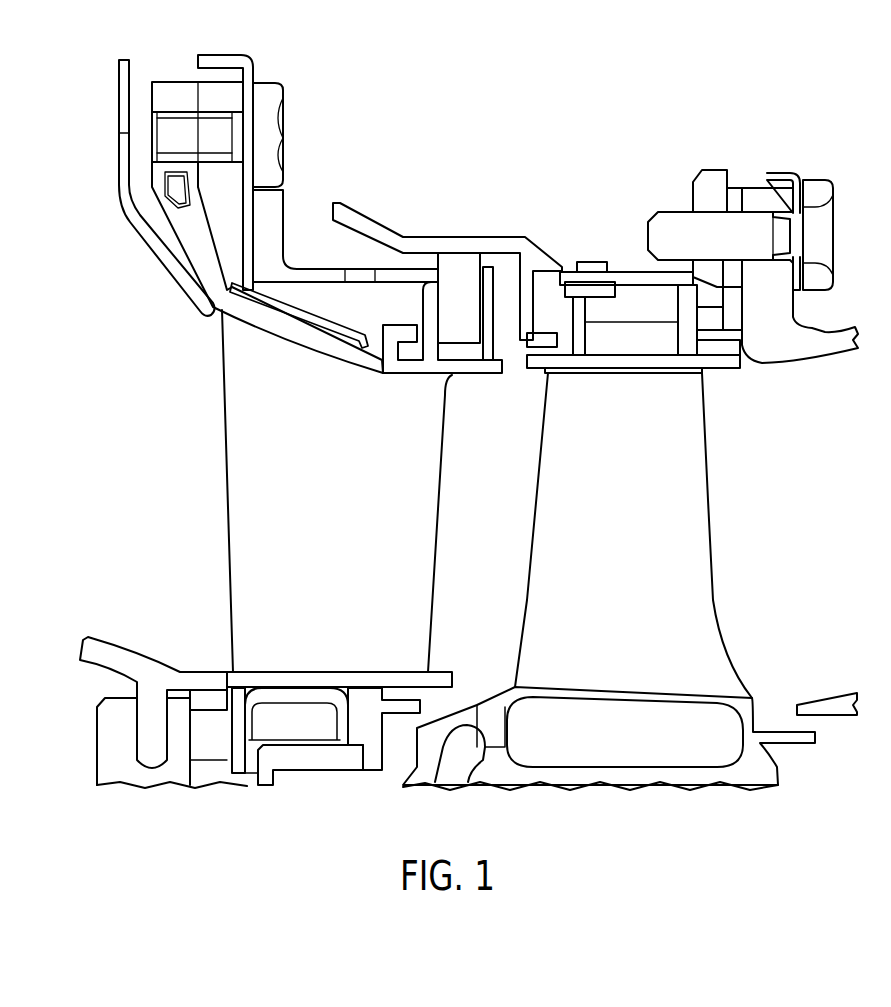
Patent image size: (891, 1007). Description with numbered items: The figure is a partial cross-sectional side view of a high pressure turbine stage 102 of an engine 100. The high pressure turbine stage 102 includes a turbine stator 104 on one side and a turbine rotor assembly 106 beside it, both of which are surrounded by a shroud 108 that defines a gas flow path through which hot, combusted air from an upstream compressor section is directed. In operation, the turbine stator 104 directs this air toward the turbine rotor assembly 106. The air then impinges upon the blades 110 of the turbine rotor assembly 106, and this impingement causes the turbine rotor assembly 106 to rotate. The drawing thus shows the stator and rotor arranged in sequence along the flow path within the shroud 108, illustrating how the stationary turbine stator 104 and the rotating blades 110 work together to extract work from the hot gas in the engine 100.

The engine 100 is at (469, 414).
The high pressure turbine stage 102 is at (692, 254).
The turbine stator 104 is at (237, 527).
The turbine rotor assembly 106 is at (630, 700).
The shroud 108 is at (531, 238).
The blades 110 is at (703, 530).